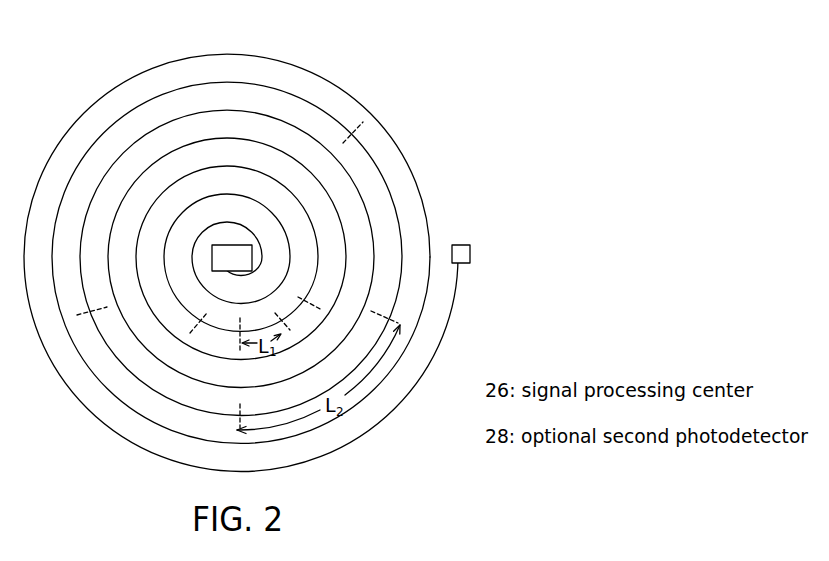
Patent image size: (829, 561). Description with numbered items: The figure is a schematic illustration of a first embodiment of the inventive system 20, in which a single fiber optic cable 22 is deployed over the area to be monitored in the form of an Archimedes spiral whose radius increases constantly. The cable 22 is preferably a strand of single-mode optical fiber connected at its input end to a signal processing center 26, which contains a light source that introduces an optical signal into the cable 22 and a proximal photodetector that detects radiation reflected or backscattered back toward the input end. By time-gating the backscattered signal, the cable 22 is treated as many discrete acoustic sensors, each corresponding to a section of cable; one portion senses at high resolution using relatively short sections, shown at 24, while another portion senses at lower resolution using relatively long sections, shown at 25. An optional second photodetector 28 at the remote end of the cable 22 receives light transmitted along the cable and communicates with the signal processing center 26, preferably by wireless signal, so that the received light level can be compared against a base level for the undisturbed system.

The system 20 is at (252, 260).
The fiber optic cable 22 is at (421, 190).
The high-resolution cable sections 24 is at (220, 343).
The low-resolution cable sections 25 is at (402, 277).
The signal processing center 26 is at (241, 268).
The optional second photodetector 28 is at (470, 253).